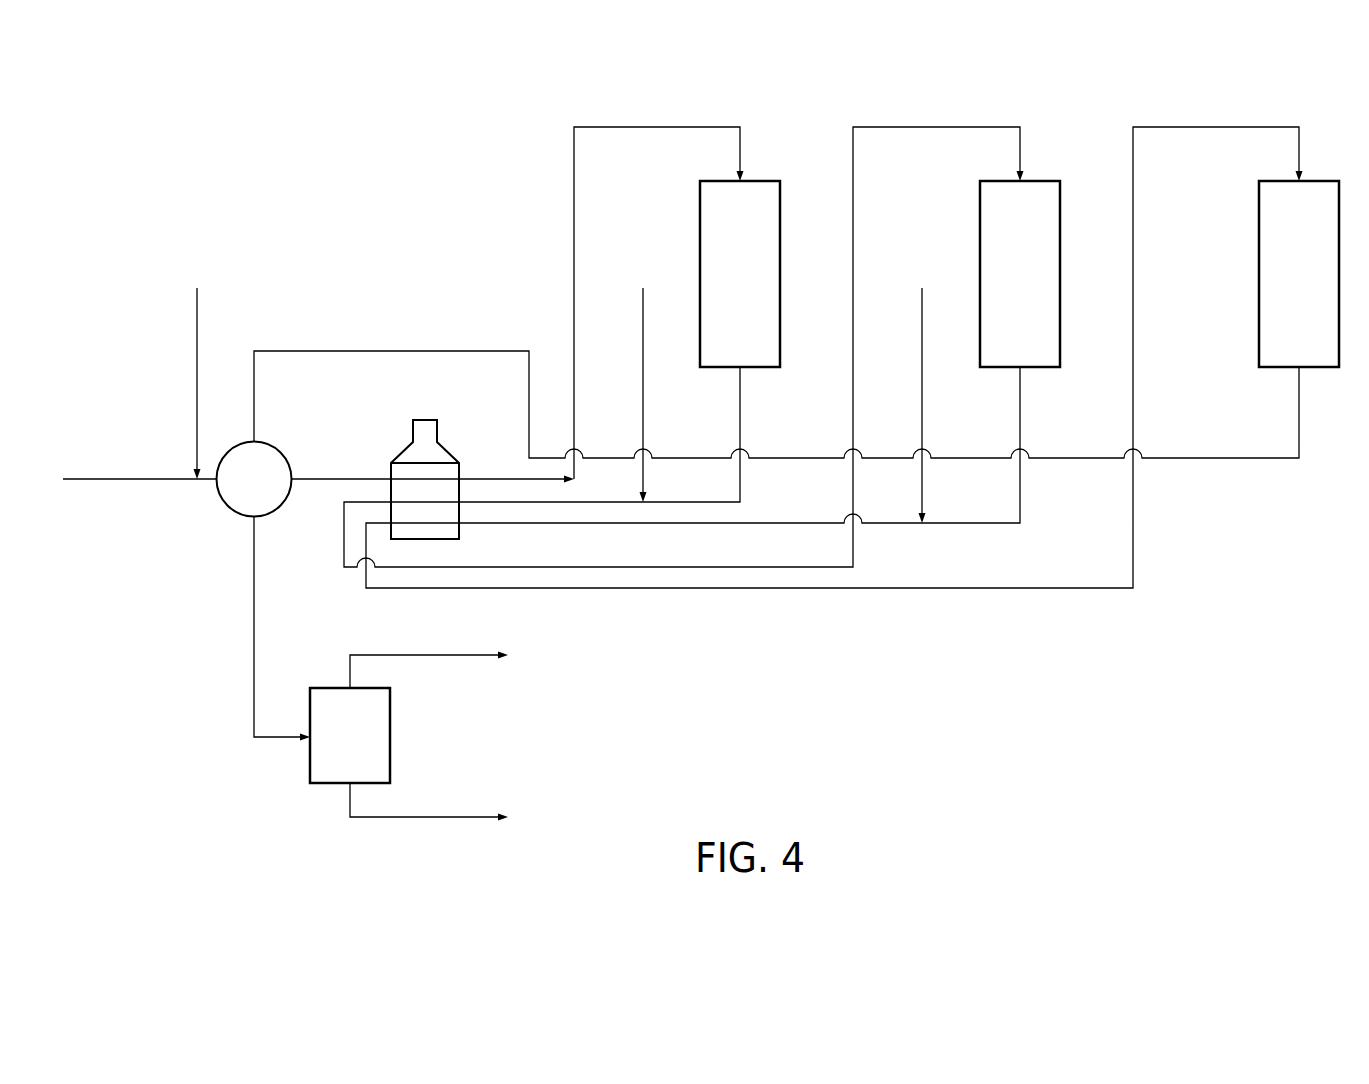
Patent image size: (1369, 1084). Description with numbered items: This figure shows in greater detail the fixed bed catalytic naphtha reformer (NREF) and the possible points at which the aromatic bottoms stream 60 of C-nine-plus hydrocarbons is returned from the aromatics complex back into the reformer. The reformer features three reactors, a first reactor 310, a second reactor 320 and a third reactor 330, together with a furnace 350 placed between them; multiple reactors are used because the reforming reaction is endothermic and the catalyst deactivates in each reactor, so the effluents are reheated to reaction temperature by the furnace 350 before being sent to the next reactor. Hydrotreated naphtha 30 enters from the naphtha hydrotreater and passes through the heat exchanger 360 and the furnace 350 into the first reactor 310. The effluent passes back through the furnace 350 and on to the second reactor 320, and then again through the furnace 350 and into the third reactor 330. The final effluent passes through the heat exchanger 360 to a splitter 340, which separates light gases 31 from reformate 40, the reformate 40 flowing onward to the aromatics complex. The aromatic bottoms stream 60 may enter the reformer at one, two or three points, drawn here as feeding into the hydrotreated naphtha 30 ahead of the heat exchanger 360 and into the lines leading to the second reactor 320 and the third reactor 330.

The hydrotreated naphtha 30 is at (127, 481).
The light gases 31 is at (420, 655).
The reformate 40 is at (420, 817).
The aromatic bottoms stream 60 is at (197, 365).
The first reactor 310 is at (762, 287).
The second reactor 320 is at (1042, 287).
The third reactor 330 is at (1322, 287).
The splitter 340 is at (375, 751).
The furnace 350 is at (425, 420).
The heat exchanger 360 is at (276, 493).